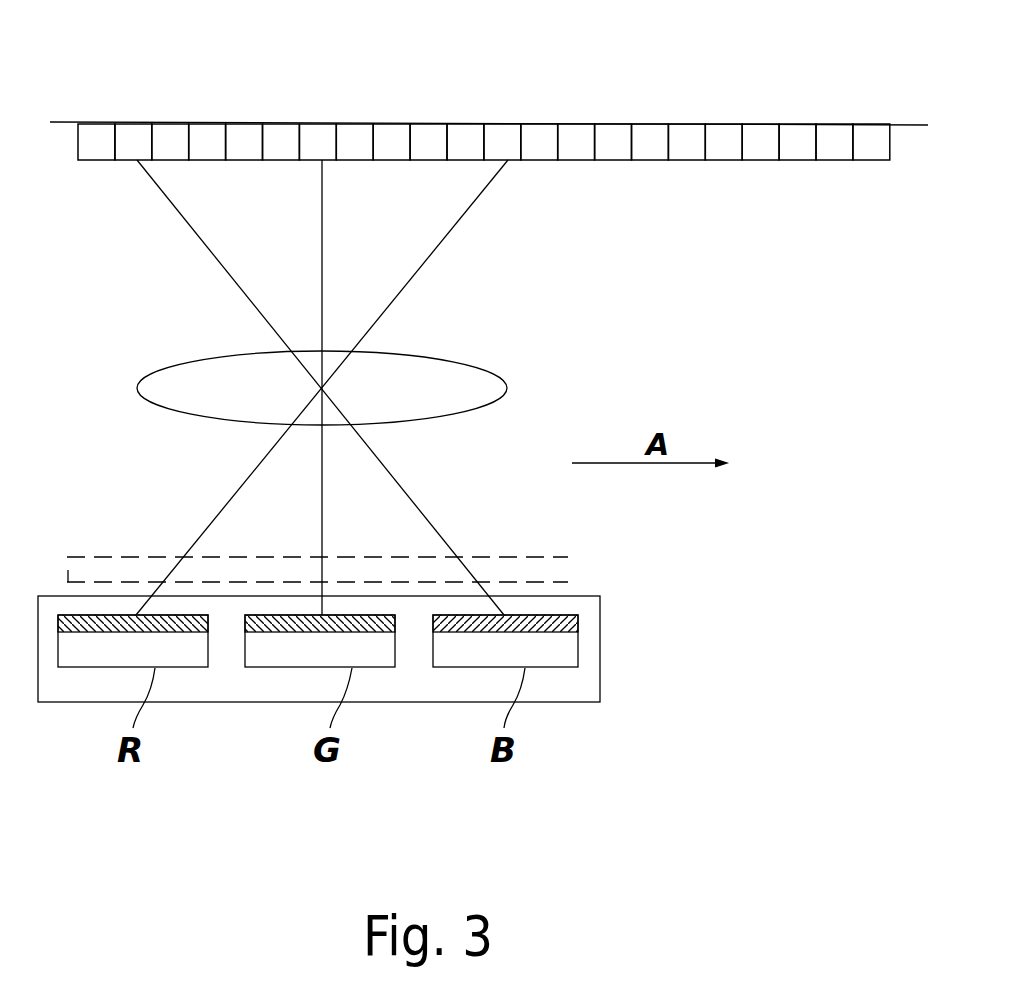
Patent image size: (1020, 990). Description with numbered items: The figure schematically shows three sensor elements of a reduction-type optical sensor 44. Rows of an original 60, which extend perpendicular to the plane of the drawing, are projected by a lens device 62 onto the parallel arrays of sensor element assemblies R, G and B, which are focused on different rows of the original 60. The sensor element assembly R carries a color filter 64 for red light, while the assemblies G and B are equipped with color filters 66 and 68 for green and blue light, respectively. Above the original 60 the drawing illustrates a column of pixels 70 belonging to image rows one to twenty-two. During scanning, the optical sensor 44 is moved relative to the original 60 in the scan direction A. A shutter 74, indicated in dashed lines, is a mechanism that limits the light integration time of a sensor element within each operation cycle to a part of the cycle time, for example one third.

The original 60 is at (65, 122).
The pixels 70 is at (800, 160).
The lens device 62 is at (507, 385).
The color filter 64 is at (100, 615).
The color filter 66 is at (300, 615).
The color filter 68 is at (543, 615).
The shutter 74 is at (566, 583).
The optical sensor 44 is at (628, 593).